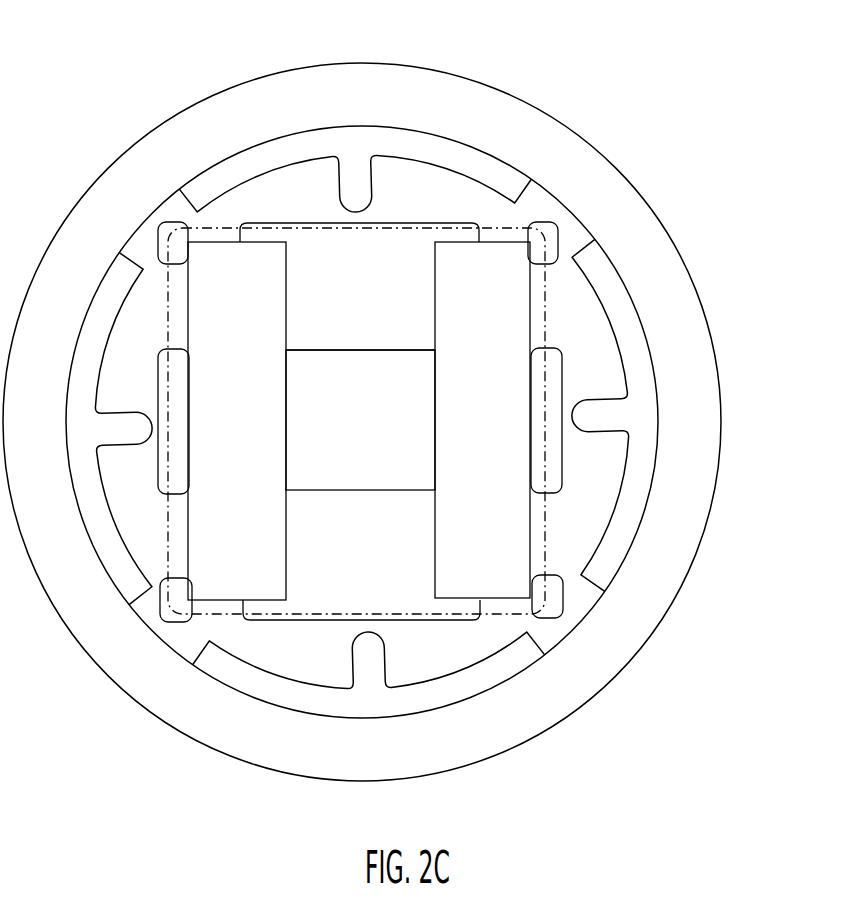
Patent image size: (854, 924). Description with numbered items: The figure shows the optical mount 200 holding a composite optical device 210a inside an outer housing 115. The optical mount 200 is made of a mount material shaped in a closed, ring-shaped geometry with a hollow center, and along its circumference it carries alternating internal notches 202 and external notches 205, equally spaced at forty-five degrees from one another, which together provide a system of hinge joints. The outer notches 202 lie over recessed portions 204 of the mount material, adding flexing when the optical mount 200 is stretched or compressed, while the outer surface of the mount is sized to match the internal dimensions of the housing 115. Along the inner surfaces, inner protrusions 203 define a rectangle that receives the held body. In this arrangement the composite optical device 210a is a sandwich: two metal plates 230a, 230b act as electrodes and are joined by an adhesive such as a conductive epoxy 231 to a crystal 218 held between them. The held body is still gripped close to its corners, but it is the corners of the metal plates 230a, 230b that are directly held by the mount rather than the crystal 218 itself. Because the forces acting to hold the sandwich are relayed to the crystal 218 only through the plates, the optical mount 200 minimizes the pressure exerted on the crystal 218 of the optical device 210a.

The outer housing 115 is at (557, 157).
The optical mount 200 is at (376, 405).
The internal notches 202 is at (350, 170).
The inner protrusions 203 is at (548, 522).
The recessed portions 204 is at (562, 458).
The external notches 205 is at (167, 240).
The composite optical device 210a is at (320, 487).
The crystal 218 is at (373, 440).
The metal plate 230a is at (217, 575).
The metal plate 230b is at (498, 583).
The conductive epoxy 231 is at (287, 372).